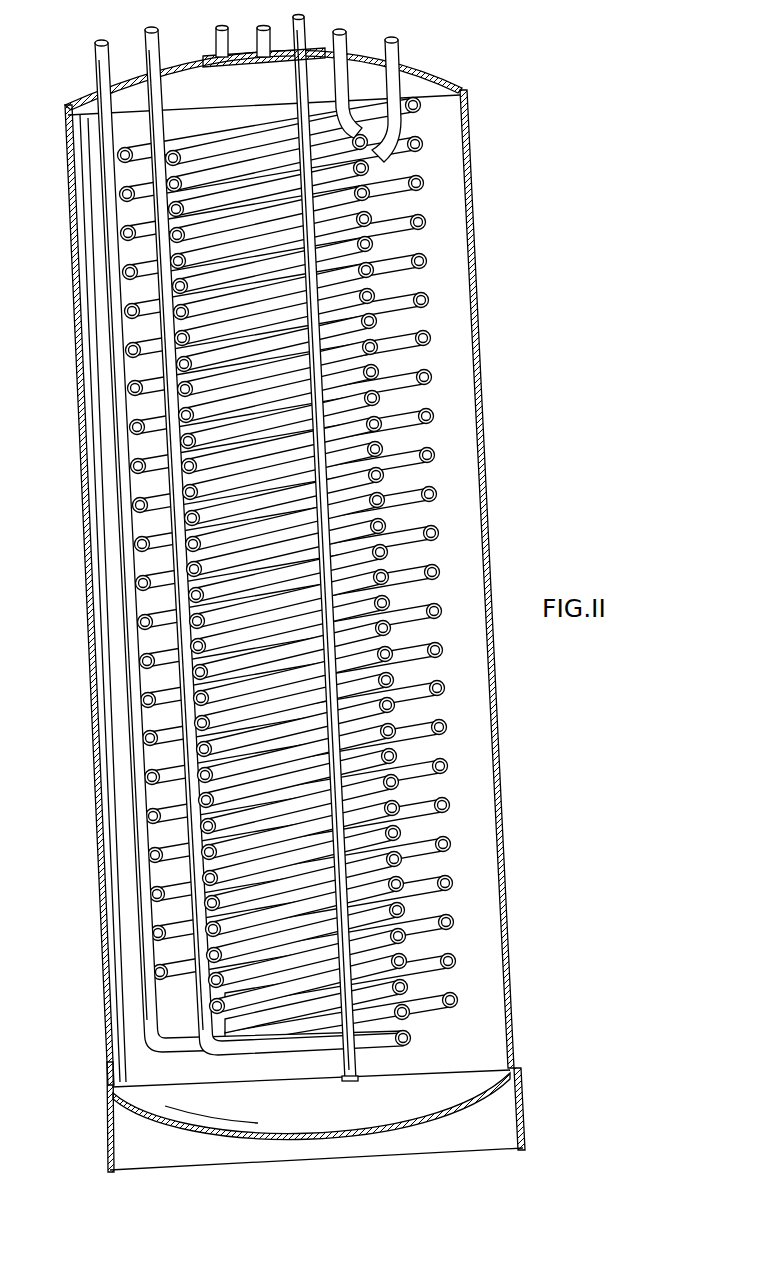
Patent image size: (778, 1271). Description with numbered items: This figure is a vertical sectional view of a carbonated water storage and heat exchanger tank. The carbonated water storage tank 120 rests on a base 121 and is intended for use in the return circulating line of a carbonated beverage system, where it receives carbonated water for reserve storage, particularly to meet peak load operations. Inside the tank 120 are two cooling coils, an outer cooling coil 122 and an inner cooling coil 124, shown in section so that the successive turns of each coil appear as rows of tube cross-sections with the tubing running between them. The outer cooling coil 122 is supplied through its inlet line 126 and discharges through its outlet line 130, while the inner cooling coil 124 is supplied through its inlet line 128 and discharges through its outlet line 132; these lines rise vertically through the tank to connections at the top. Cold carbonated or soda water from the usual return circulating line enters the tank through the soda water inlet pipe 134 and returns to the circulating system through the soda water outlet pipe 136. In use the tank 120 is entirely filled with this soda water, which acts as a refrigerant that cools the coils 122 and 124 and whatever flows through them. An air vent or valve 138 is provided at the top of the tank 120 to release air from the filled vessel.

The carbonated water storage tank 120 is at (477, 370).
The base 121 is at (520, 1090).
The outer cooling coil 122 is at (423, 307).
The inner cooling coil 124 is at (373, 250).
The inlet line 126 is at (97, 60).
The inlet line 128 is at (156, 40).
The outlet line 130 is at (393, 40).
The outlet line 132 is at (340, 40).
The soda water inlet pipe 134 is at (216, 30).
The soda water outlet pipe 136 is at (301, 40).
The air vent or valve 138 is at (272, 67).